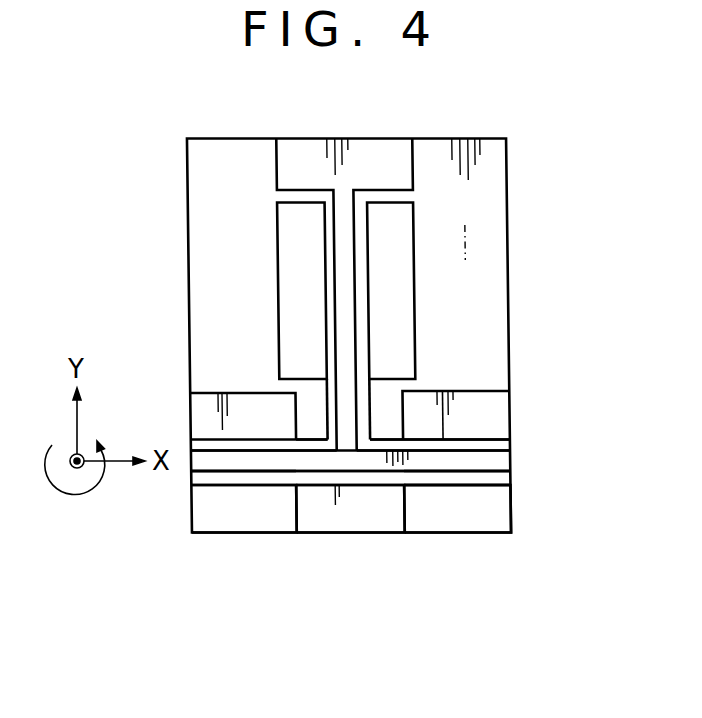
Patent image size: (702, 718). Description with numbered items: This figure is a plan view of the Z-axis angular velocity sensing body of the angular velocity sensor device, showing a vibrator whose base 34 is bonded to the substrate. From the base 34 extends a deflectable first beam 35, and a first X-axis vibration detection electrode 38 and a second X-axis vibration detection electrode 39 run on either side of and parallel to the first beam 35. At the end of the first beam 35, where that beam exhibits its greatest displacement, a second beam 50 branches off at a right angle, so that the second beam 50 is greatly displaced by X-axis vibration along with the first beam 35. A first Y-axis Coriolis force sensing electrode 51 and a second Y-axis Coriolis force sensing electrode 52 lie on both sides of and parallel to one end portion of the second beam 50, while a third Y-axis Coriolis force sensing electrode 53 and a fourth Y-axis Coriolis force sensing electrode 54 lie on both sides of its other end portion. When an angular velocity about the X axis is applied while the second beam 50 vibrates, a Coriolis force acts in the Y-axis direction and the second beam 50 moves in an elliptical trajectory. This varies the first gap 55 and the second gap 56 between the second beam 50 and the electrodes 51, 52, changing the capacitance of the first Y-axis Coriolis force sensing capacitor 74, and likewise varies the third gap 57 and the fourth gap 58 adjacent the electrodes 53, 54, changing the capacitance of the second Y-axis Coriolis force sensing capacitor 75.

The base 34 is at (387, 163).
The first beam 35 is at (341, 293).
The first X-axis vibration detection electrode 38 is at (390, 223).
The second X-axis vibration detection electrode 39 is at (282, 230).
The second beam 50 is at (196, 462).
The first Y-axis Coriolis force sensing electrode 51 is at (203, 418).
The second Y-axis Coriolis force sensing electrode 52 is at (232, 513).
The third Y-axis Coriolis force sensing electrode 53 is at (480, 410).
The fourth Y-axis Coriolis force sensing electrode 54 is at (494, 497).
The first gap 55 is at (250, 441).
The second gap 56 is at (266, 474).
The third gap 57 is at (492, 440).
The fourth gap 58 is at (456, 475).
The first Y-axis Coriolis force sensing capacitor 74 is at (221, 465).
The second Y-axis Coriolis force sensing capacitor 75 is at (415, 460).